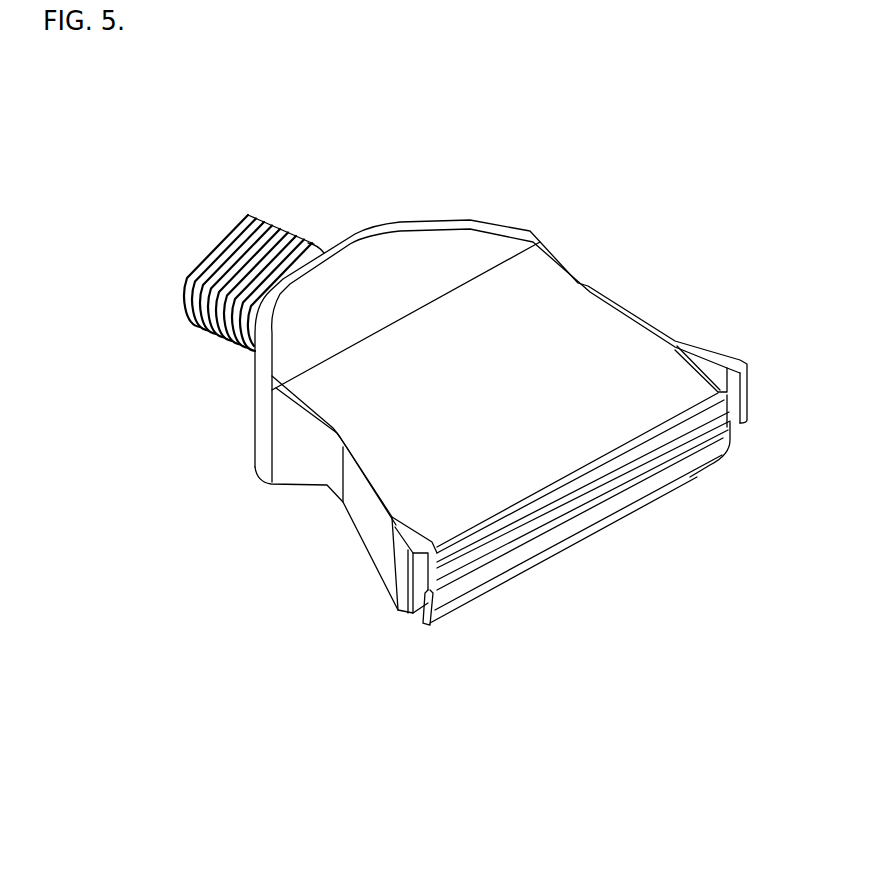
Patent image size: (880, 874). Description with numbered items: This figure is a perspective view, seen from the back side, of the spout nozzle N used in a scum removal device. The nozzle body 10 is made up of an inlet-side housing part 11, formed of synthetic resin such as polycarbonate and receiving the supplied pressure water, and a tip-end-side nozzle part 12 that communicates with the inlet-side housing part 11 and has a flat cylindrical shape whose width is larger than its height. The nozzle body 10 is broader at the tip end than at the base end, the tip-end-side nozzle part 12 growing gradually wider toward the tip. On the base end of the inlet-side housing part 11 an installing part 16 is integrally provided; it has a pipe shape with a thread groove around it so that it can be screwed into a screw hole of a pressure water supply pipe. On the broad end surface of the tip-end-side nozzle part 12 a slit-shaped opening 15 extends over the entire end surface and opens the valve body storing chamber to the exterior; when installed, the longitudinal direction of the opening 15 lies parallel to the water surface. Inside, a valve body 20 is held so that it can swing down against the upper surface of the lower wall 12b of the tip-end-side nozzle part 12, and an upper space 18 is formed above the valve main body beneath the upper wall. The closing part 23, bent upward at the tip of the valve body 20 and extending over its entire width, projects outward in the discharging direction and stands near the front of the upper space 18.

The nozzle N is at (521, 204).
The installing part 16 is at (261, 221).
The inlet-side housing part 11 is at (397, 275).
The lower wall 12b is at (605, 382).
The tip-end-side nozzle part 12 is at (673, 322).
The nozzle body 10 is at (292, 488).
The opening 15 is at (622, 462).
The upper space 18 is at (580, 514).
The valve body 20 is at (568, 548).
The closing part 23 is at (430, 623).